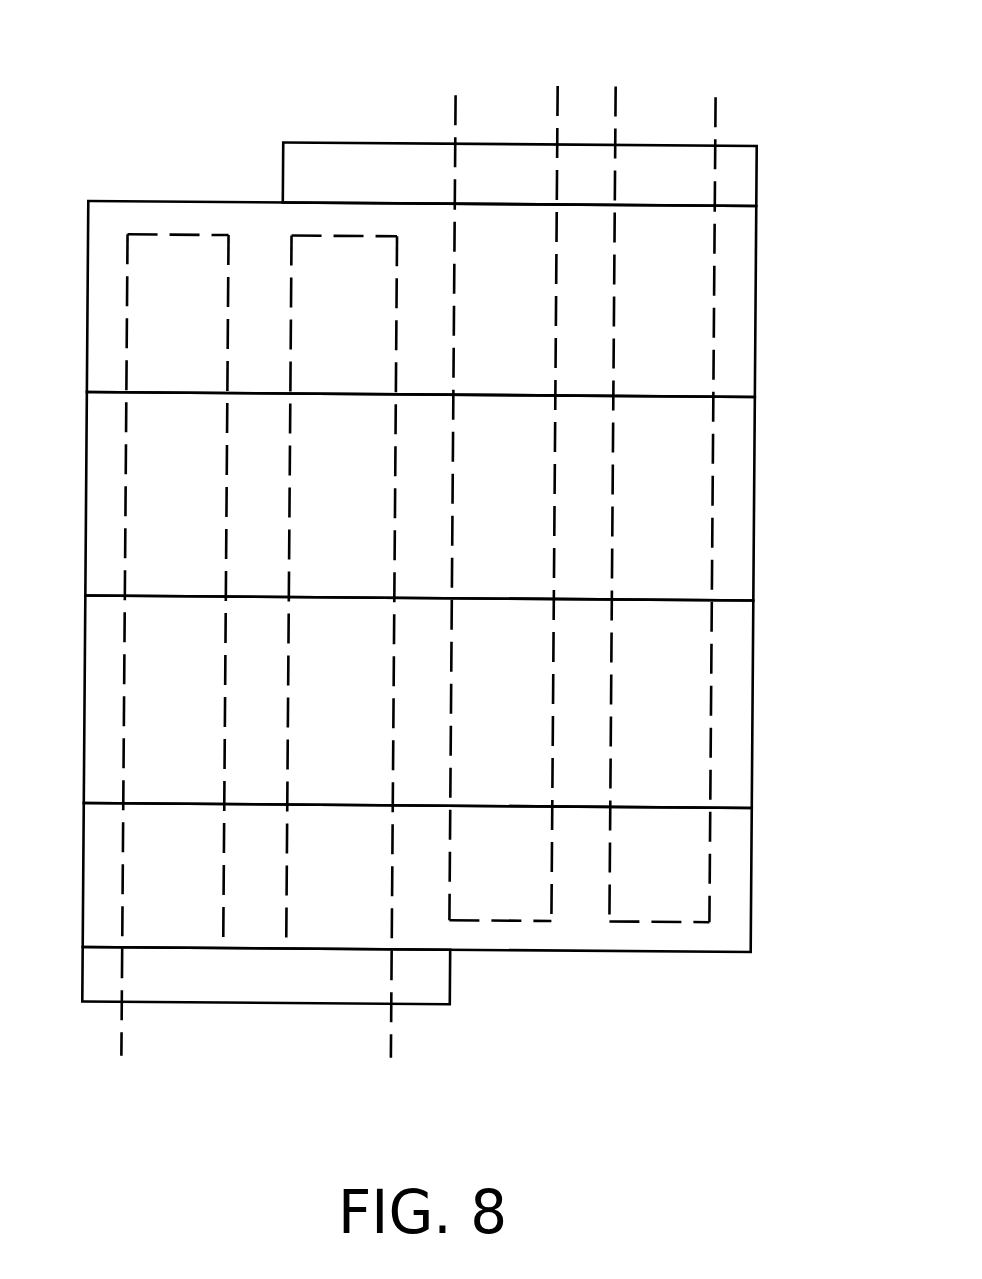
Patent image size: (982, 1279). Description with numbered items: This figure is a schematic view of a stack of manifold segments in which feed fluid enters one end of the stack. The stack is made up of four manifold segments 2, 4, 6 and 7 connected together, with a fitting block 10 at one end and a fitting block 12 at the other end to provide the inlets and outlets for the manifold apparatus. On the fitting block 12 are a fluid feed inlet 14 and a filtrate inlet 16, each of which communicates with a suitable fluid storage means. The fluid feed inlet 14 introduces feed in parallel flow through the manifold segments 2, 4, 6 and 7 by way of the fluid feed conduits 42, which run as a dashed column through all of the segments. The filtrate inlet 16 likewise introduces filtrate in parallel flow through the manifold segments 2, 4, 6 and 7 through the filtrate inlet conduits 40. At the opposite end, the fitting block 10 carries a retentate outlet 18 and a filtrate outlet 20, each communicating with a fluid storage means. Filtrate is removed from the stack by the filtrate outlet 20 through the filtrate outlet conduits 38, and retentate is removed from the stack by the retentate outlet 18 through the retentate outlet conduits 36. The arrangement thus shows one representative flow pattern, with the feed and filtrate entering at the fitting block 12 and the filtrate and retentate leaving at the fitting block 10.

The manifold segment 2 is at (754, 284).
The manifold segment 4 is at (754, 490).
The manifold segment 6 is at (754, 670).
The manifold segment 7 is at (755, 868).
The fitting block 10 is at (754, 174).
The fitting block 12 is at (453, 980).
The fluid feed inlet 14 is at (125, 1029).
The filtrate inlet 16 is at (394, 1033).
The retentate outlet 18 is at (712, 117).
The filtrate outlet 20 is at (452, 115).
The retentate outlet conduits 36 is at (712, 258).
The filtrate outlet conduits 38 is at (452, 355).
The filtrate inlet conduits 40 is at (394, 295).
The fluid feed conduits 42 is at (226, 308).